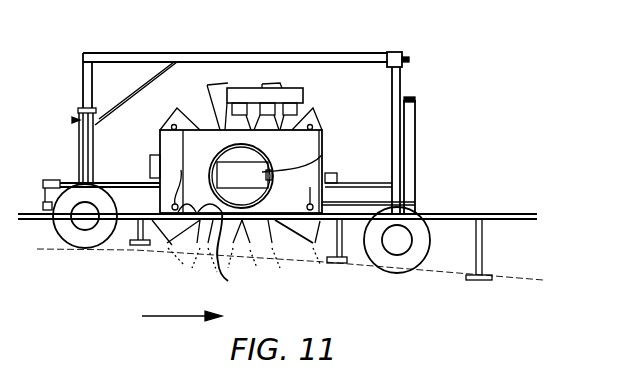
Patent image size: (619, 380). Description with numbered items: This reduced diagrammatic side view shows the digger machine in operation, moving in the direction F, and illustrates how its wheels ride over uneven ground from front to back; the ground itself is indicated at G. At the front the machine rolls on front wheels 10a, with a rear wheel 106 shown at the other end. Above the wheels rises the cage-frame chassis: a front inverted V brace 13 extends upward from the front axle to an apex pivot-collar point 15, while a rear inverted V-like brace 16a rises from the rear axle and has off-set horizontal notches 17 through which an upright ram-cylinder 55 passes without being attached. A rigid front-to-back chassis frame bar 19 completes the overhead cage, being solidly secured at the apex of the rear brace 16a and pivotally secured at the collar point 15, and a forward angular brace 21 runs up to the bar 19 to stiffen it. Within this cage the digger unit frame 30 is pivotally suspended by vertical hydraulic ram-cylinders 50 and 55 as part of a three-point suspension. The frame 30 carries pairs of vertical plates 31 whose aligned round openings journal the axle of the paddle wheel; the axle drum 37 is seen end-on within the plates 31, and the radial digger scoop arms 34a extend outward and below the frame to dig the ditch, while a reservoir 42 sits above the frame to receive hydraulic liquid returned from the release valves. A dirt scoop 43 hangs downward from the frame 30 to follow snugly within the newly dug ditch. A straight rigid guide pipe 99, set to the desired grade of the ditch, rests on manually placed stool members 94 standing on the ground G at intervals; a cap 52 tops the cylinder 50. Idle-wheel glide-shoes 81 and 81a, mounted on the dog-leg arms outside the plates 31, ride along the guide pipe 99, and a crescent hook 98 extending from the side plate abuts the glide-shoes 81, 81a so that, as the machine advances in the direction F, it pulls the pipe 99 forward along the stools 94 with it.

The front wheels 10a is at (397, 268).
The inverted V brace 13 is at (400, 88).
The apex pivot-collar point 15 is at (398, 58).
The inverted V-like brace 16a is at (85, 82).
The off-set horizontal notches 17 is at (78, 119).
The chassis frame bar 19 is at (313, 53).
The forward angular brace 21 is at (152, 85).
The digger unit frame 30 is at (45, 193).
The vertical plates 31 is at (318, 148).
The radial digger scoop arms 34a is at (268, 83).
The drum 37 is at (302, 164).
The reservoir 42 is at (305, 97).
The dirt scoop 43 is at (168, 250).
The hydraulic vertical ram-cylinder 50 is at (415, 138).
The post cap 52 is at (415, 104).
The hydraulic vertical ram-cylinder 55 is at (95, 145).
The idle-wheel glide-shoe 81 is at (192, 183).
The idle-wheel glide-shoe 81a is at (292, 182).
The stool members 94 is at (130, 242).
The crescent hooks 98 is at (235, 254).
The guide pipe 99 is at (518, 213).
The front wheel 106 is at (84, 243).
The ground G is at (452, 276).
The direction of forward movement F is at (182, 329).